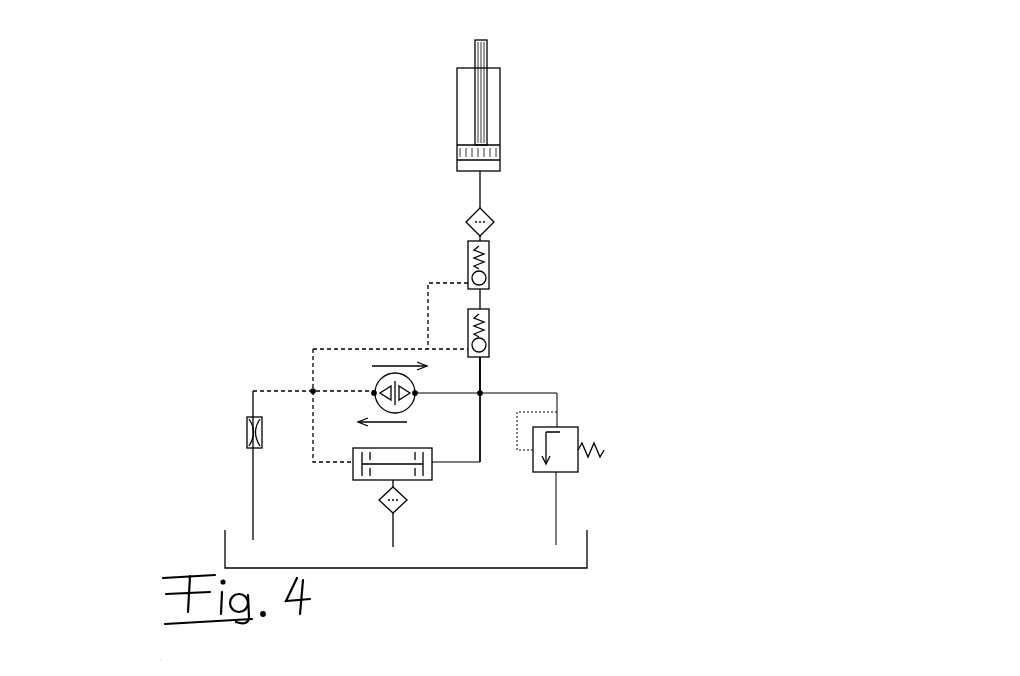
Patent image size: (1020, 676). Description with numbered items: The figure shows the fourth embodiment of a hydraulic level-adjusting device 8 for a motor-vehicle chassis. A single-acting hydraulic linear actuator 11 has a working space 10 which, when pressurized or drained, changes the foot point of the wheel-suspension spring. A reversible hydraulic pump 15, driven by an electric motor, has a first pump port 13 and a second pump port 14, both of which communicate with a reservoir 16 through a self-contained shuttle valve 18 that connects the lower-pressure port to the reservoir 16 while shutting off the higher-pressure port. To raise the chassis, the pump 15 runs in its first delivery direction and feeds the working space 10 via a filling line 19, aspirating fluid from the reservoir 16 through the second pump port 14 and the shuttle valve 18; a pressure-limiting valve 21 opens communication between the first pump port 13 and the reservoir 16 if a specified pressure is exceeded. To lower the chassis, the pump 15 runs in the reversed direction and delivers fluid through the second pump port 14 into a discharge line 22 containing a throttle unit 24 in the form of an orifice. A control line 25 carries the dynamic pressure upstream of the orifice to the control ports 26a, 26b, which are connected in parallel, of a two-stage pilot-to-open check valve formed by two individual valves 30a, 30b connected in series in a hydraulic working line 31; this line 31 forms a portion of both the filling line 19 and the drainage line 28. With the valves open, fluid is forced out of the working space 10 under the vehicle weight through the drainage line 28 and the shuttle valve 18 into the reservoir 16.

The hydraulic level-adjusting device 8 is at (632, 305).
The working space 10 is at (492, 165).
The single-acting hydraulic linear actuator 11 is at (500, 122).
The first pump port 13 is at (415, 393).
The second pump port 14 is at (372, 393).
The hydraulic pump 15 is at (415, 395).
The reservoir 16 is at (587, 568).
The shuttle valve 18 is at (432, 479).
The filling line 19 is at (487, 382).
The pressure-limiting valve 21 is at (578, 471).
The discharge line 22 is at (254, 390).
The throttle unit 24 is at (242, 417).
The control line 25 is at (313, 347).
The control port 26a is at (465, 348).
The control port 26b is at (465, 283).
The drainage line 28 is at (487, 382).
The individual valve 30a is at (492, 337).
The individual valve 30b is at (495, 258).
The hydraulic working line 31 is at (481, 298).